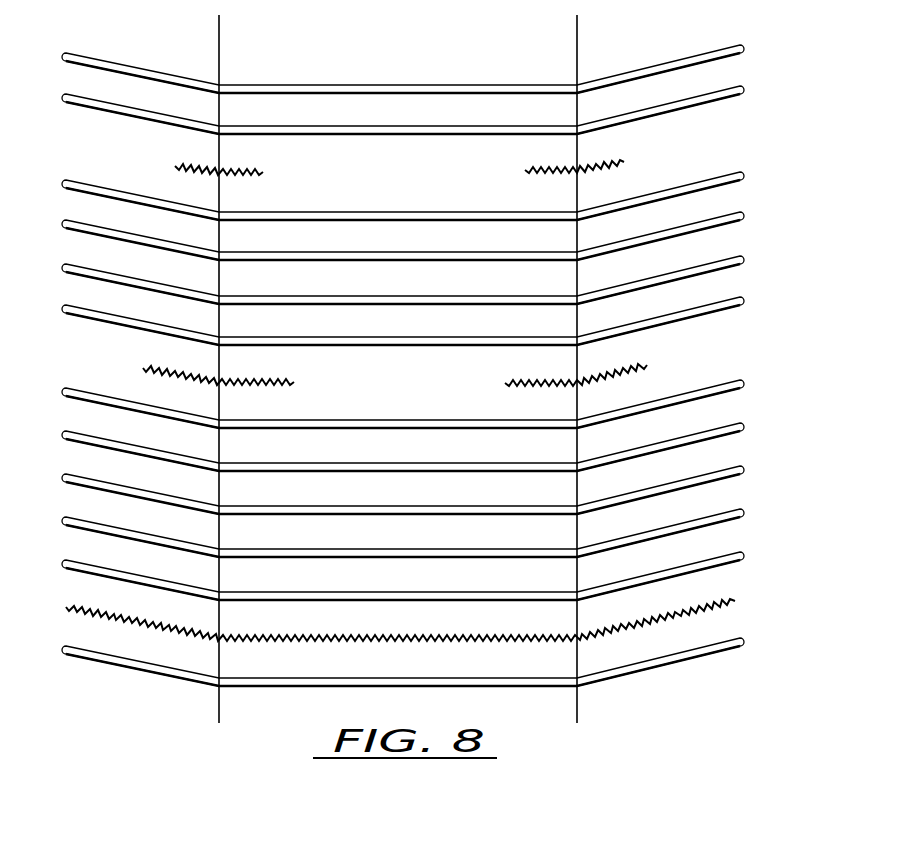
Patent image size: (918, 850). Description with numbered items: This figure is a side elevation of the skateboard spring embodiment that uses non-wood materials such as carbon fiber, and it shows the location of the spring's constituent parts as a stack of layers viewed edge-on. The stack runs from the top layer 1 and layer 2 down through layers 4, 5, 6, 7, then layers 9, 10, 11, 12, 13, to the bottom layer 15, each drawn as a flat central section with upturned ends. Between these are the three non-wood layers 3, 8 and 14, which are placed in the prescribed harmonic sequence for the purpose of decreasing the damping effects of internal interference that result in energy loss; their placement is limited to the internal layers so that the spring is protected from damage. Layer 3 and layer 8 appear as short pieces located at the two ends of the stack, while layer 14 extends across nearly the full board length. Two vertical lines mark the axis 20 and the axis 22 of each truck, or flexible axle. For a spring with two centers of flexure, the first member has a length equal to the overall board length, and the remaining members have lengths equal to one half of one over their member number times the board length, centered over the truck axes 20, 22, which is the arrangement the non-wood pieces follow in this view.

The spring layer 1 is at (744, 46).
The spring layer 2 is at (744, 87).
The non-wood layer 3 is at (175, 166).
The spring layer 4 is at (744, 173).
The spring layer 5 is at (744, 213).
The spring layer 6 is at (744, 257).
The spring layer 7 is at (744, 298).
The non-wood layer 8 is at (143, 368).
The spring layer 9 is at (744, 381).
The spring layer 10 is at (744, 424).
The spring layer 11 is at (744, 467).
The spring layer 12 is at (744, 510).
The spring layer 13 is at (744, 553).
The non-wood layer 14 is at (737, 601).
The spring layer 15 is at (744, 639).
The truck axis 20 is at (219, 30).
The truck axis 22 is at (577, 28).